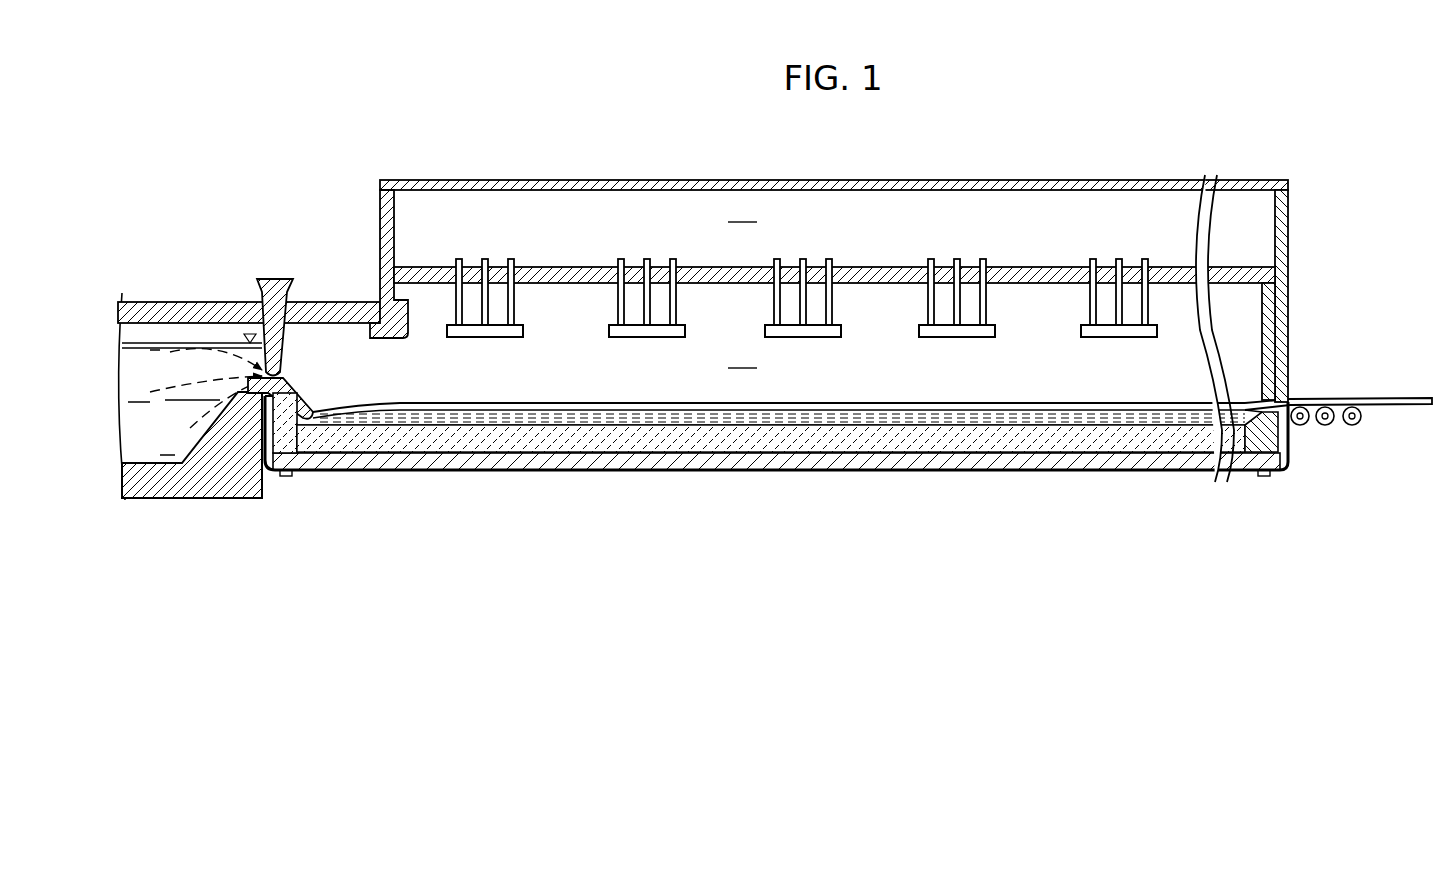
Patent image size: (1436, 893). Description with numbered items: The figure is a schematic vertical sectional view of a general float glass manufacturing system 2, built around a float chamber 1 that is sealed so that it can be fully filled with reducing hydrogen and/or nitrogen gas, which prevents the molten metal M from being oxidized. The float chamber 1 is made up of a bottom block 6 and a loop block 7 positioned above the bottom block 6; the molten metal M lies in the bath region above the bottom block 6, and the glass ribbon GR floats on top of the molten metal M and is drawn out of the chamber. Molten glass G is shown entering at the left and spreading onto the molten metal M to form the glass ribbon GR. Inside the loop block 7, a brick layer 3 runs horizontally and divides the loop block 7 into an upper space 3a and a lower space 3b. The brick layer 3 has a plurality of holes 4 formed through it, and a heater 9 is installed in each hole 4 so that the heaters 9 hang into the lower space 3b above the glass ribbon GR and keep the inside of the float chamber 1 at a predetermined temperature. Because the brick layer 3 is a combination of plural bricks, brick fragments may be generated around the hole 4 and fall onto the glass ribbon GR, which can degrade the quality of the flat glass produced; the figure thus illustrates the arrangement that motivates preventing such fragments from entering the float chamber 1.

The float chamber 1 is at (626, 548).
The float glass manufacturing system 2 is at (910, 474).
The brick layer 3 is at (568, 267).
The upper space 3a is at (742, 210).
The lower space 3b is at (742, 356).
The hole 4 is at (674, 268).
The bottom block 6 is at (680, 445).
The loop block 7 is at (1258, 305).
The heater 9 is at (802, 282).
The molten glass G is at (566, 403).
The molten metal M is at (1100, 420).
The glass ribbon GR is at (1388, 400).